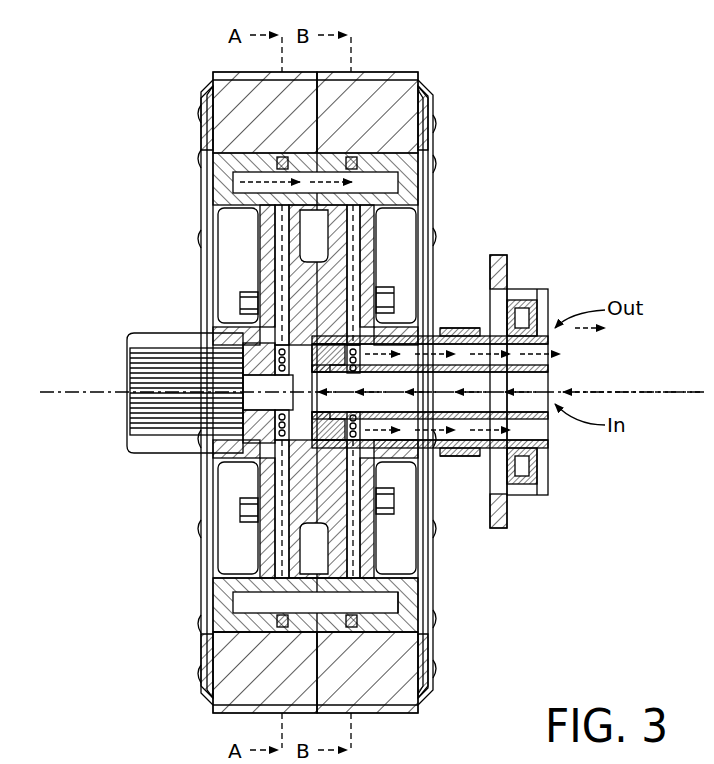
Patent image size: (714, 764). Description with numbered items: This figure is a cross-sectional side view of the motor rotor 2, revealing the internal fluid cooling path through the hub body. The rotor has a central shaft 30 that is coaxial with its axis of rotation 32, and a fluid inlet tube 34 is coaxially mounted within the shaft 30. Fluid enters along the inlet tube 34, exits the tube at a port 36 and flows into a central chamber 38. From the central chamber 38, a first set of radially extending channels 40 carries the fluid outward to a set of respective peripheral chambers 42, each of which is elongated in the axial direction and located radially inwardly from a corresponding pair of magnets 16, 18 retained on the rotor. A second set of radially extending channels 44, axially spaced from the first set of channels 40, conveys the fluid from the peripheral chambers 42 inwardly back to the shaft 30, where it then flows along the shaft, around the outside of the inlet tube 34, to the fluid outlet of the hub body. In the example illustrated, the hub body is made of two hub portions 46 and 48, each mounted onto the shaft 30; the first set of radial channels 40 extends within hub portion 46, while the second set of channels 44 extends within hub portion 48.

The motor rotor 2 is at (523, 68).
The magnets 16 is at (210, 107).
The magnets 18 is at (430, 107).
The central shaft 30 is at (131, 340).
The axis of rotation 32 is at (64, 390).
The fluid inlet tube 34 is at (483, 418).
The port 36 is at (265, 430).
The central chamber 38 is at (262, 332).
The radially extending channels 40 is at (244, 503).
The peripheral chambers 42 is at (242, 185).
The radially extending channels 44 is at (352, 560).
The hub portion 46 is at (222, 615).
The hub portion 48 is at (418, 612).